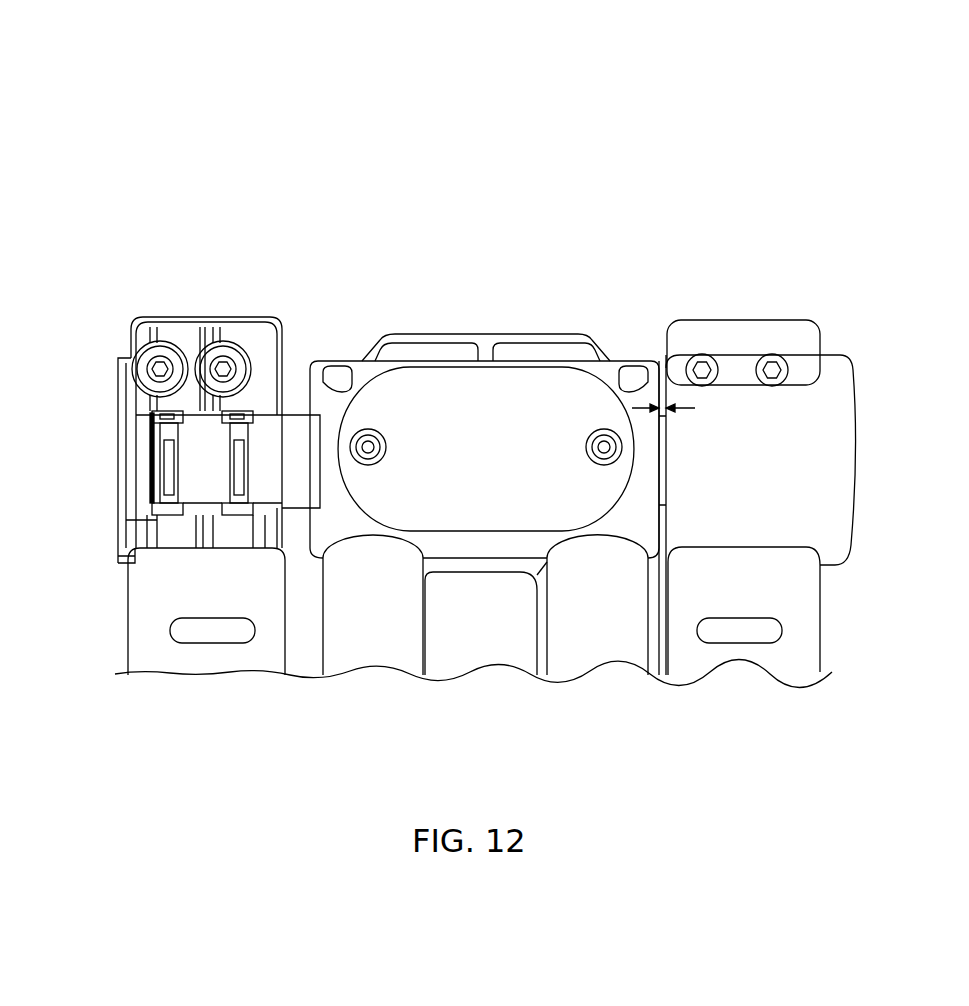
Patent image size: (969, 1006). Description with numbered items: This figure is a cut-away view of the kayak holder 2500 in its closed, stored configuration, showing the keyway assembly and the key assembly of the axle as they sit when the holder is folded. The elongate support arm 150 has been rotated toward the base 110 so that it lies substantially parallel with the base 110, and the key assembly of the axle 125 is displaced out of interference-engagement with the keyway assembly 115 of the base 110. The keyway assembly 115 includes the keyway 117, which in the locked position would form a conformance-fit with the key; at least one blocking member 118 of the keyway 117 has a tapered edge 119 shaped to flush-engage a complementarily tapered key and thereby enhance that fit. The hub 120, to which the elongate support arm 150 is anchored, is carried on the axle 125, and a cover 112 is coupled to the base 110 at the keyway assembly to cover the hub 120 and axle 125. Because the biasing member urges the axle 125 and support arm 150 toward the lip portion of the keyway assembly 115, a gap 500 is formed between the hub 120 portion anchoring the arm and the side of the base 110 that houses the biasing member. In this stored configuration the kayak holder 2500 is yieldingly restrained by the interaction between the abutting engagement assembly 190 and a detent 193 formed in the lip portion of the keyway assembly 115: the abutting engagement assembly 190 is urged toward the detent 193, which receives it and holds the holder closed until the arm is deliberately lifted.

The assembly 2500 is at (222, 62).
The base 110 is at (262, 664).
The cover 112 is at (828, 358).
The keyway assembly 115 is at (128, 478).
The keyway 117 is at (128, 397).
The blocking member 118 is at (127, 518).
The tapered edge 119 is at (127, 517).
The hub 120 is at (412, 367).
The axle 125 is at (288, 420).
The elongate support arm 150 is at (370, 668).
The abutting engagement assembly 190 is at (153, 423).
The detent 193 is at (150, 395).
The gap 500 is at (640, 402).